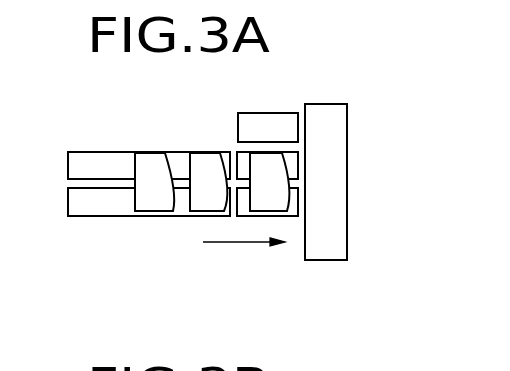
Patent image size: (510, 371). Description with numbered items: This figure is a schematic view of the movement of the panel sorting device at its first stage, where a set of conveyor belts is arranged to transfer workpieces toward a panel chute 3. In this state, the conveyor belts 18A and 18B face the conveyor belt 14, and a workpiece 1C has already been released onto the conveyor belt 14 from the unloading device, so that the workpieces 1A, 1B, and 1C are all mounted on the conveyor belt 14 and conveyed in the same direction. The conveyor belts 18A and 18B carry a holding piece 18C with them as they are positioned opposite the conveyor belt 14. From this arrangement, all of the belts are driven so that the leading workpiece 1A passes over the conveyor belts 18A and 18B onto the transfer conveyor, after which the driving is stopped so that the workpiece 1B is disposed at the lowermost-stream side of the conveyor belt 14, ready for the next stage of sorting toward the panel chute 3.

The conveyor belt 14 is at (85, 157).
The conveyor belt 18A is at (235, 217).
The conveyor belt 18B is at (241, 152).
The holding piece 18C is at (260, 114).
The panel chute 3 is at (348, 180).
The workpiece 1A is at (269, 182).
The workpiece 1B is at (208, 182).
The workpiece 1C is at (154, 182).